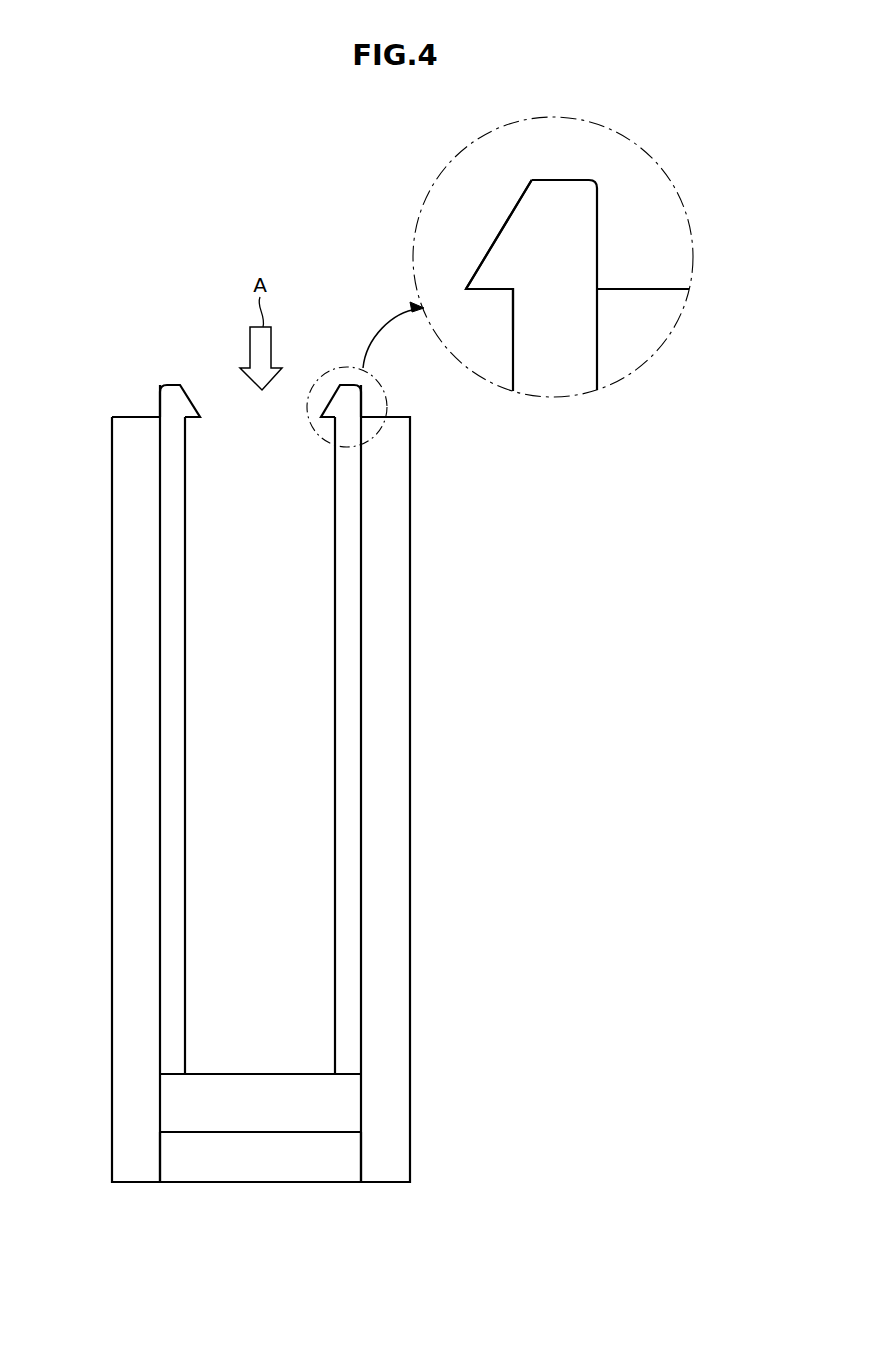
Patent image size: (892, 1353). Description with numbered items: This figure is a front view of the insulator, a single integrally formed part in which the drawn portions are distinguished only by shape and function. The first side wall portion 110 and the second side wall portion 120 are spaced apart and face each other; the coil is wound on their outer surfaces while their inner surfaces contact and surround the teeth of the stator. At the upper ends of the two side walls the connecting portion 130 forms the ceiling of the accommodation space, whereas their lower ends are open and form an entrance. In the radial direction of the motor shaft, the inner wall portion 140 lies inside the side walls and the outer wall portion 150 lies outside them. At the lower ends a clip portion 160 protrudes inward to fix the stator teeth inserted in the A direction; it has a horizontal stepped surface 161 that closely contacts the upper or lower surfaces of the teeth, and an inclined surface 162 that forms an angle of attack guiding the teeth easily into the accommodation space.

The first side wall portion 110 is at (350, 566).
The second side wall portion 120 is at (172, 566).
The connecting portion 130 is at (295, 1072).
The inner wall portion 140 is at (263, 1162).
The outer wall portion 150 is at (135, 903).
The clip portion 160 is at (153, 402).
The stepped surface 161 is at (490, 290).
The inclined surface 162 is at (507, 215).